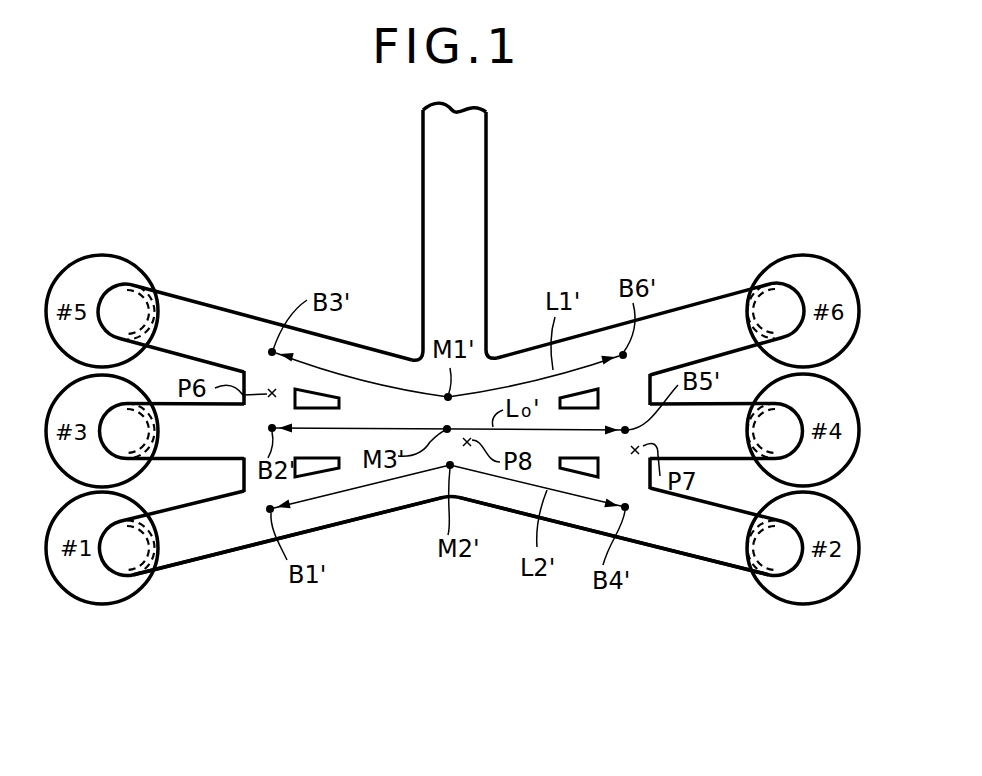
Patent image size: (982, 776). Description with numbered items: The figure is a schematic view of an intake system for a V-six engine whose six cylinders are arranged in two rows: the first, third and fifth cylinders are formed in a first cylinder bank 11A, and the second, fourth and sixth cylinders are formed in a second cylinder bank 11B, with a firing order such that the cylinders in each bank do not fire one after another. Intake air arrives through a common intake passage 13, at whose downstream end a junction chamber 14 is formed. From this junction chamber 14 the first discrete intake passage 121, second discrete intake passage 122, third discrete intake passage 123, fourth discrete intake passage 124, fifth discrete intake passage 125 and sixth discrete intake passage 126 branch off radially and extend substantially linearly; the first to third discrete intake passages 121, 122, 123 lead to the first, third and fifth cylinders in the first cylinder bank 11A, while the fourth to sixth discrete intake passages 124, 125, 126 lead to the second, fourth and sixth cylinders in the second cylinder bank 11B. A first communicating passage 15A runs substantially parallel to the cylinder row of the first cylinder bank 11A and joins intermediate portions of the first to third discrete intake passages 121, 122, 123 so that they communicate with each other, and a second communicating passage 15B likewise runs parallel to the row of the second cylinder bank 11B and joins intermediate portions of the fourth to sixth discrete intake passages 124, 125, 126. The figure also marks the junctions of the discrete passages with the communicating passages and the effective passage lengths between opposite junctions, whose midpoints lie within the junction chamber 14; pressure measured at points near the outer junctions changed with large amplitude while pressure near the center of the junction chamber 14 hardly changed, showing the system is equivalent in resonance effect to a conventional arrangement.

The first cylinder bank 11A is at (139, 243).
The second cylinder bank 11B is at (797, 247).
The common intake passage 13 is at (500, 212).
The junction chamber 14 is at (408, 495).
The first discrete intake passage 121 is at (210, 548).
The second discrete intake passage 122 is at (192, 444).
The third discrete intake passage 123 is at (190, 306).
The fourth discrete intake passage 124 is at (728, 553).
The fifth discrete intake passage 125 is at (735, 450).
The sixth discrete intake passage 126 is at (715, 320).
The first communicating passage 15A is at (259, 372).
The second communicating passage 15B is at (625, 483).